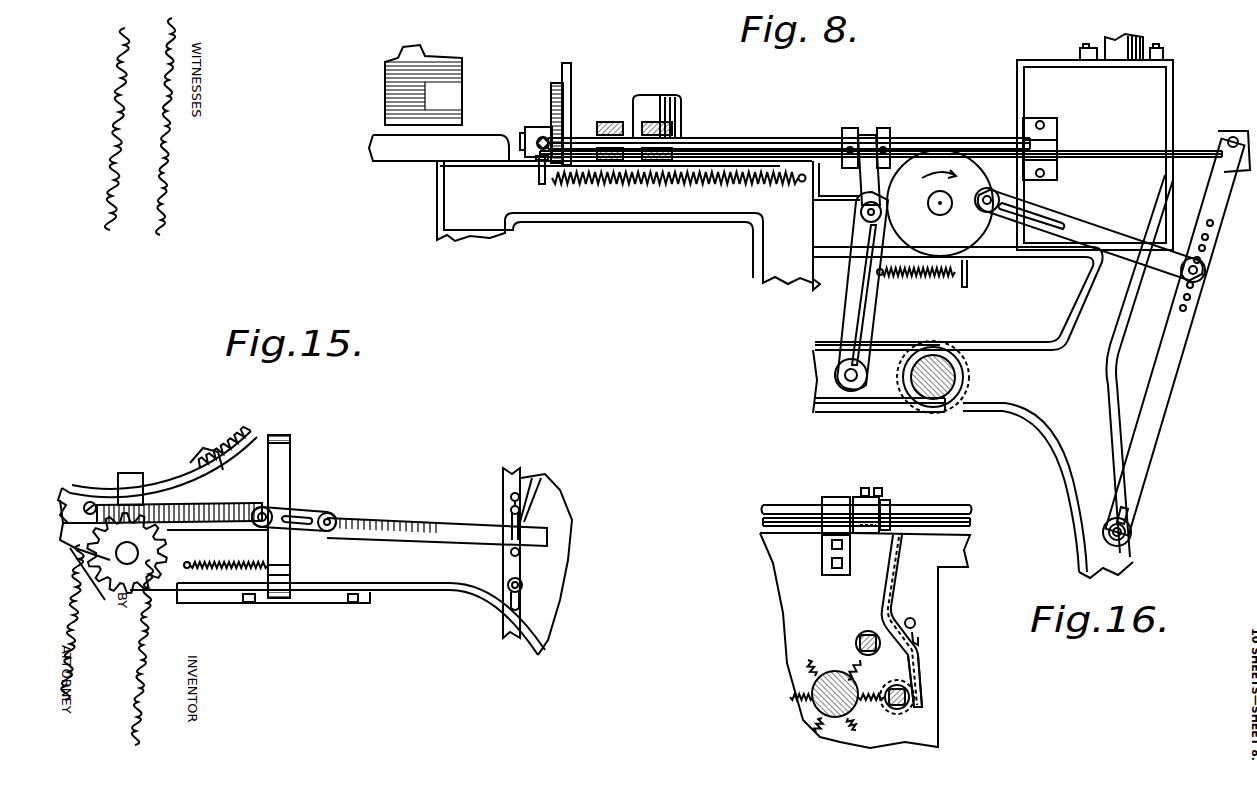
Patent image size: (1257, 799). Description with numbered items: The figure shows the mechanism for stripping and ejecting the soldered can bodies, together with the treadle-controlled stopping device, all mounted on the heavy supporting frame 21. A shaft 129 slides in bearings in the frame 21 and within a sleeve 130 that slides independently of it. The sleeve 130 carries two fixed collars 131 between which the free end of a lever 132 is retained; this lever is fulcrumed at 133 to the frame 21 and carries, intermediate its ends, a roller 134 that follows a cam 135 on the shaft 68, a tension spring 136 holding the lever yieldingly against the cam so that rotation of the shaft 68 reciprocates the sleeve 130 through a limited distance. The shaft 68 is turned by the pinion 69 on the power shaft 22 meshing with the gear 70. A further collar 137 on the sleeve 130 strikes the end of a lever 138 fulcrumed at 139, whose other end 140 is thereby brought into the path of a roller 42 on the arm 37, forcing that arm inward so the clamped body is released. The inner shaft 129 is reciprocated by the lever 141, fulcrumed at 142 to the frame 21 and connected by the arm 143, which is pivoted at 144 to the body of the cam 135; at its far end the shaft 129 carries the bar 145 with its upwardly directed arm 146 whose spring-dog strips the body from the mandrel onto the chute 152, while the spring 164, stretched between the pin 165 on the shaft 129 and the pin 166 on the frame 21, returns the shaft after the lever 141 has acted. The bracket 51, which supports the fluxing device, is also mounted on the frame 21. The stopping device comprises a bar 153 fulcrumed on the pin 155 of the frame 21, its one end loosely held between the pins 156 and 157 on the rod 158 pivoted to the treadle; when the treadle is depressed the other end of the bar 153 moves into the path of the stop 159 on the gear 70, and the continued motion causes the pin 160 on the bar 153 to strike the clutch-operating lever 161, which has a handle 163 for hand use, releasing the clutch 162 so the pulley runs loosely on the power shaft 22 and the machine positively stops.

In FIG. 8, the chute 152 is at (395, 96).
In FIG. 8, the bracket 51 is at (432, 163).
In FIG. 8, the pin 165 is at (538, 172).
In FIG. 8, the spring 164 is at (605, 185).
In FIG. 8, the pin 166 is at (800, 182).
In FIG. 8, the upwardly directed arm 146 is at (572, 82).
In FIG. 8, the bar 145 is at (551, 108).
In FIG. 8, the collar 137 is at (608, 116).
In FIG. 16, the collar 137 is at (886, 505).
In FIG. 8, the shaft 129 is at (1100, 150).
In FIG. 16, the shaft 129 is at (953, 516).
In FIG. 8, the sleeve 130 is at (922, 138).
In FIG. 16, the sleeve 130 is at (805, 493).
In FIG. 8, the fixed collars 131 is at (884, 129).
In FIG. 8, the lever 132 is at (857, 300).
In FIG. 8, the roller 134 is at (862, 215).
In FIG. 8, the shaft 68 is at (938, 210).
In FIG. 8, the cam 135 is at (970, 232).
In FIG. 8, the tension spring 136 is at (940, 282).
In FIG. 8, the pivot 144 is at (1000, 185).
In FIG. 8, the arm 143 is at (1100, 218).
In FIG. 8, the lever 141 is at (1222, 165).
In FIG. 8, the fulcrum 142 is at (1132, 532).
In FIG. 8, the power shaft 22 is at (945, 368).
In FIG. 8, the clutch 162 is at (963, 386).
In FIG. 8, the clutch-operating lever 161 is at (893, 410).
In FIG. 15, the clutch-operating lever 161 is at (272, 568).
In FIG. 8, the supporting frame 21 is at (1037, 405).
In FIG. 15, the supporting frame 21 is at (430, 568).
In FIG. 8, the fulcrum 133 is at (845, 378).
In FIG. 15, the stop 159 is at (92, 500).
In FIG. 15, the gear 70 is at (160, 492).
In FIG. 15, the handle 163 is at (282, 437).
In FIG. 15, the pin 160 is at (268, 512).
In FIG. 15, the pin 155 is at (336, 517).
In FIG. 15, the bar 153 is at (440, 508).
In FIG. 15, the rod 158 is at (522, 480).
In FIG. 15, the pin 156 is at (521, 509).
In FIG. 15, the pin 157 is at (520, 554).
In FIG. 15, the pinion 69 is at (150, 555).
In FIG. 16, the lever 138 is at (888, 607).
In FIG. 16, the fulcrum 139 is at (916, 623).
In FIG. 16, the other end of lever 140 is at (920, 690).
In FIG. 16, the roller 42 is at (890, 706).
In FIG. 16, the arm 37 is at (905, 710).